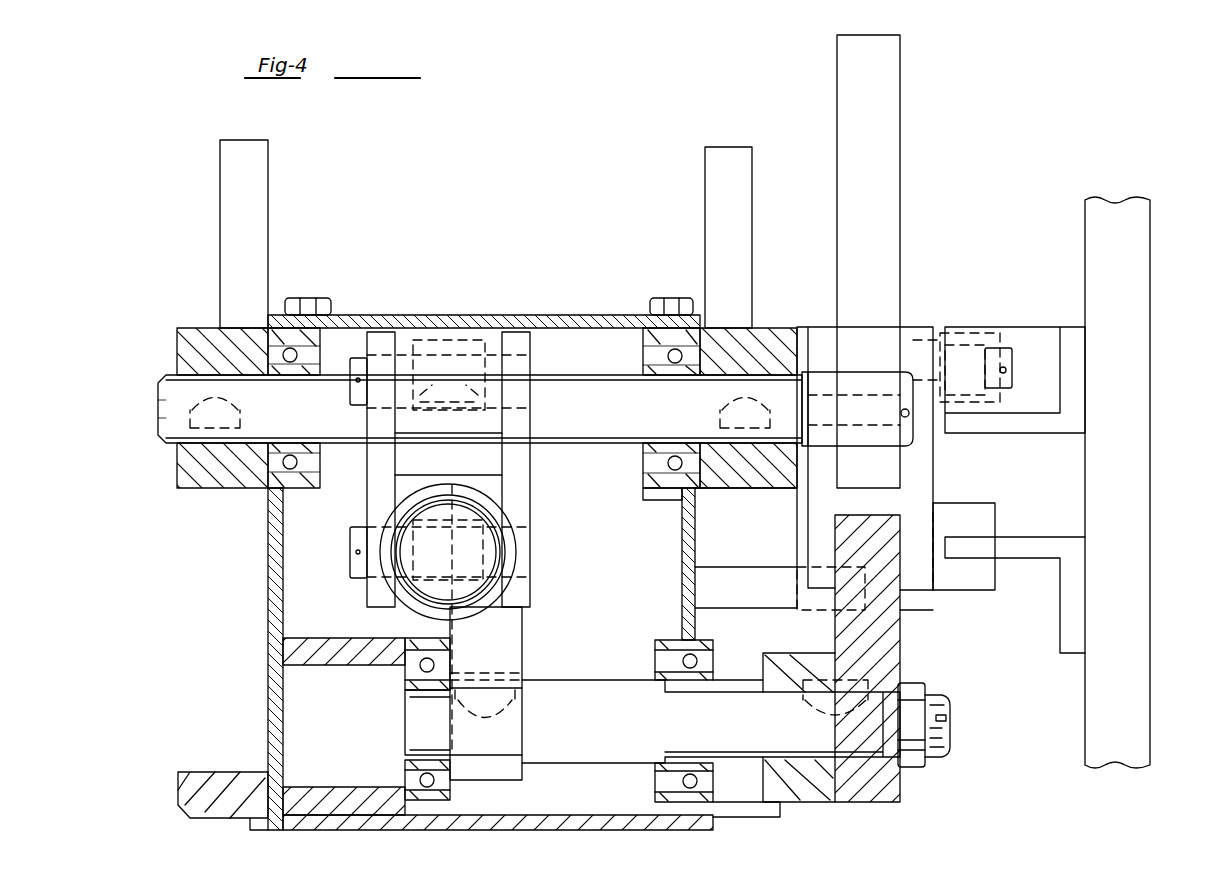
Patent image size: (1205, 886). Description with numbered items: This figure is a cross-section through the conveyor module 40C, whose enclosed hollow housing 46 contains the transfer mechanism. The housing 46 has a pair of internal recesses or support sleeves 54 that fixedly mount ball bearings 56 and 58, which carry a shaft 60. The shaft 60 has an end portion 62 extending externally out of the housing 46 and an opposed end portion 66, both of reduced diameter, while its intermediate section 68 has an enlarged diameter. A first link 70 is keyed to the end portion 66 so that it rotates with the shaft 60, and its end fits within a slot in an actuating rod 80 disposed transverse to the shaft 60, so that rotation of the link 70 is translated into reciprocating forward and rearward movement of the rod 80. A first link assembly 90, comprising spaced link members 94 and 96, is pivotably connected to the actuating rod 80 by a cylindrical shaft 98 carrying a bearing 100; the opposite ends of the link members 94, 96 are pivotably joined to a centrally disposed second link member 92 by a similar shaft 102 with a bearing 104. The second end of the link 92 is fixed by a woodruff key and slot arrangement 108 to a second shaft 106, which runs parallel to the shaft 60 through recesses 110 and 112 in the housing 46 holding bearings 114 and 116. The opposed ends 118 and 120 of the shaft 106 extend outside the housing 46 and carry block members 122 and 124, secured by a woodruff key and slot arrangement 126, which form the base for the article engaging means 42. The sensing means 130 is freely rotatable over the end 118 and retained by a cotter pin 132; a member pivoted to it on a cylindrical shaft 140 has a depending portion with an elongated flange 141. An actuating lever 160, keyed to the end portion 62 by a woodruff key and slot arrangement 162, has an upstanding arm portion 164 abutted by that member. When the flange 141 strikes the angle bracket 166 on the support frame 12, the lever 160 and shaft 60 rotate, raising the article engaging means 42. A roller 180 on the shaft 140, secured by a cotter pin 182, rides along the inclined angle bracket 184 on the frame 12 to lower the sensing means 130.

The support frame 12 is at (1151, 490).
The conveyor module 40C is at (432, 205).
The article engaging means 42 is at (222, 196).
The housing 46 is at (522, 314).
The support sleeve 54 is at (350, 672).
The ball bearing 56 is at (680, 772).
The ball bearing 58 is at (412, 778).
The shaft 60 is at (546, 672).
The end portion 62 is at (920, 772).
The end portion 66 is at (415, 713).
The intermediate section 68 is at (535, 770).
The first link 70 is at (525, 622).
The actuating rod 80 is at (512, 508).
The first link assembly 90 is at (537, 482).
The second link member 92 is at (412, 478).
The link member 94 is at (500, 526).
The link member 96 is at (365, 520).
The cylindrical shaft 98 is at (350, 576).
The bearing 100 is at (435, 592).
The shaft 102 is at (355, 360).
The bearing 104 is at (455, 352).
The second shaft 106 is at (752, 362).
The woodruff key and slot arrangement 108 is at (445, 390).
The recess 110 is at (642, 352).
The recess 112 is at (240, 345).
The bearing 114 is at (692, 462).
The bearing 116 is at (290, 465).
The end 118 is at (802, 345).
The end 120 is at (160, 395).
The block member 122 is at (758, 337).
The block member 124 is at (190, 470).
The woodruff key and slot arrangement 126 is at (205, 420).
The sensing means 130 is at (975, 92).
The cotter pin 132 is at (915, 432).
The cylindrical shaft 140 is at (1010, 372).
The flange 141 is at (1002, 512).
The actuating lever 160 is at (905, 645).
The woodruff key and slot arrangement 162 is at (838, 702).
The upstanding arm portion 164 is at (835, 548).
The angle bracket 166 is at (1028, 560).
The roller 180 is at (955, 332).
The cotter pin 182 is at (1005, 348).
The inclined angle bracket 184 is at (1050, 410).